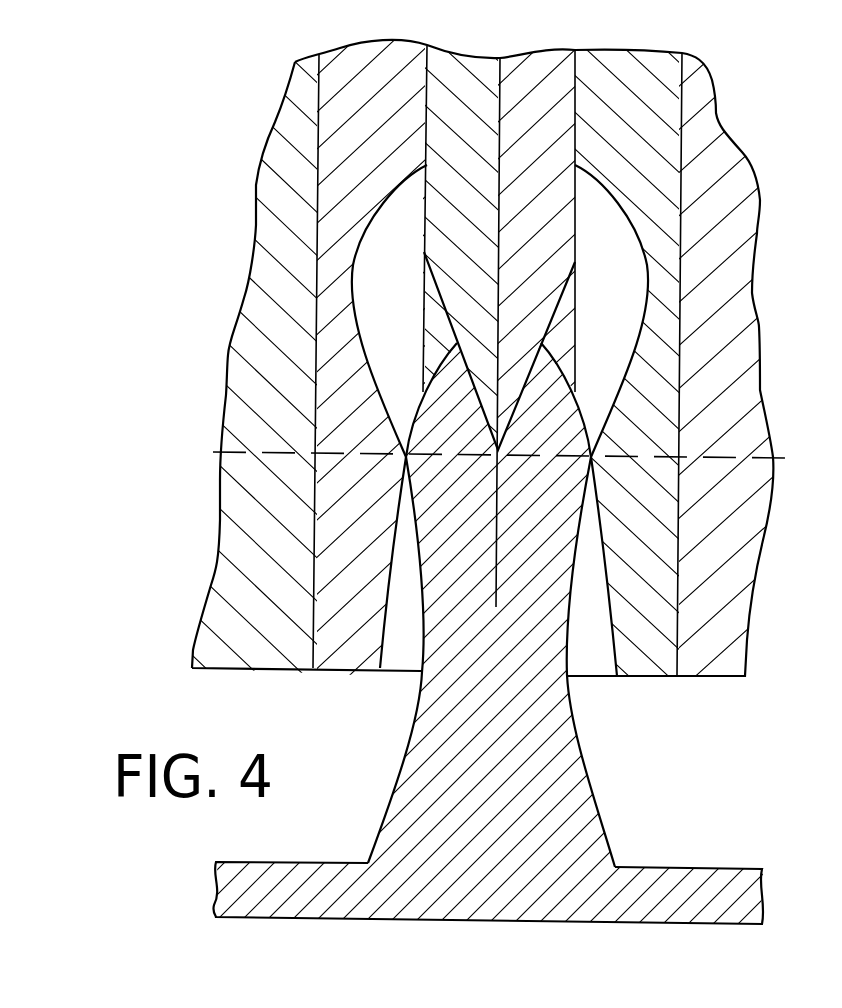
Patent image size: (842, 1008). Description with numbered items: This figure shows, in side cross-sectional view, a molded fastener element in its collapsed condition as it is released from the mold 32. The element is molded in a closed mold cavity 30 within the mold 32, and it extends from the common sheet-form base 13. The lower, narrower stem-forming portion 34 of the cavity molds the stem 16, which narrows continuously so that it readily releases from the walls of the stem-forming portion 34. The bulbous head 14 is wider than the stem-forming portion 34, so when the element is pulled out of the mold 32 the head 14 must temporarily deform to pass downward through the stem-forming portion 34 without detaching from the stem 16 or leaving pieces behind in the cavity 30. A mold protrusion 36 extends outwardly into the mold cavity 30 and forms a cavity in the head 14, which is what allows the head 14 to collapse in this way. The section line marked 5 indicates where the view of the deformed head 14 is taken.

The mold 32 is at (742, 122).
The mold cavity 30 is at (613, 258).
The mold protrusion 36 is at (450, 230).
The stem-forming portion 34 is at (405, 613).
The head 14 is at (552, 527).
The stem 16 is at (555, 770).
The sheet-form base 13 is at (672, 893).
The section line 5- 5 is at (823, 463).